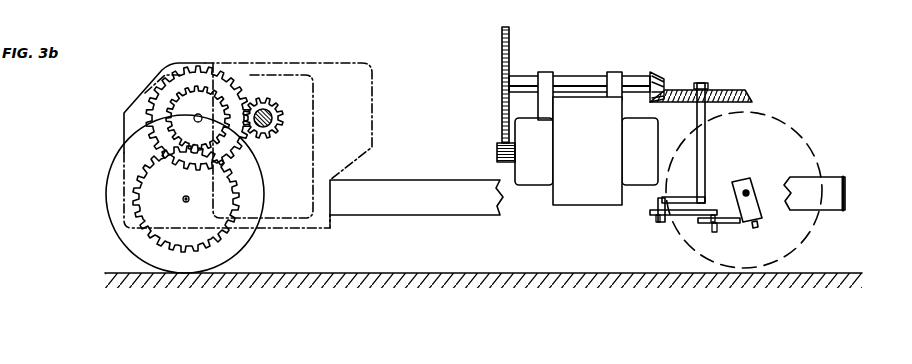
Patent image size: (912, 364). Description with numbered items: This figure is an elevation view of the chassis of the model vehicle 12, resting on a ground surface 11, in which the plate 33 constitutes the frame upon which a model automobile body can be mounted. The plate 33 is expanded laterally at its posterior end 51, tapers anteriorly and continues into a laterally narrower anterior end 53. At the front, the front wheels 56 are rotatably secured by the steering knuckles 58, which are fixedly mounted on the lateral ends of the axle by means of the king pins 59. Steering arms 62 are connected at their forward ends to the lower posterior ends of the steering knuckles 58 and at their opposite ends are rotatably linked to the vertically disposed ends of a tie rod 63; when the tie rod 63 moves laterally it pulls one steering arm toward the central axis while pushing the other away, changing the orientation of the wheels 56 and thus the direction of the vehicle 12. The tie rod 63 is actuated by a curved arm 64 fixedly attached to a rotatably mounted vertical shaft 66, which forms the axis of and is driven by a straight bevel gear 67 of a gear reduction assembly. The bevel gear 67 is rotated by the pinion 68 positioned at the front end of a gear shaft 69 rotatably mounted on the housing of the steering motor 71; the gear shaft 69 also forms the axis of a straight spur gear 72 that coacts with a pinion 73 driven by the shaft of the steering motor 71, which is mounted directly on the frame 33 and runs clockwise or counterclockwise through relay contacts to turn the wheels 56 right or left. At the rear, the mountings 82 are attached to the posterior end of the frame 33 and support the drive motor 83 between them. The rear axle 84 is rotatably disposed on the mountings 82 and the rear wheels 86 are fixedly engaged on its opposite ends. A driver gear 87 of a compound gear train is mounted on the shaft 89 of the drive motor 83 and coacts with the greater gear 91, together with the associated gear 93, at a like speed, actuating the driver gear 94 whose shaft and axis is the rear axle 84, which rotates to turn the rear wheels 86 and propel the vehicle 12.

The ground surface 11 is at (433, 274).
The model vehicle 12 is at (418, 180).
The plate 33 is at (362, 0).
The posterior end 51 is at (342, 202).
The anterior end 53 is at (845, 177).
The front wheels 56 is at (783, 117).
The steering knuckles 58 is at (766, 175).
The king pins 59 is at (739, 180).
The steering arms 62 is at (740, 226).
The tie rod 63 is at (662, 215).
The curved arm 64 is at (657, 200).
The vertical shaft 66 is at (697, 117).
The straight bevel gear 67 is at (727, 90).
The pinion 68 is at (660, 72).
The gear shaft 69 is at (575, 80).
The steering motor 71 is at (575, 206).
The straight spur gear 72 is at (502, 68).
The pinion 73 is at (496, 140).
The rear wheel and drive motor assembly mountings 82 is at (123, 122).
The drive motor 83 is at (315, 121).
The rear axle 84 is at (183, 197).
The rear wheels 86 is at (106, 190).
The driver gear 87 is at (277, 128).
The shaft 89 is at (275, 105).
The greater gear 91 is at (175, 73).
The gear 93 is at (197, 87).
The driver gear 94 is at (222, 233).